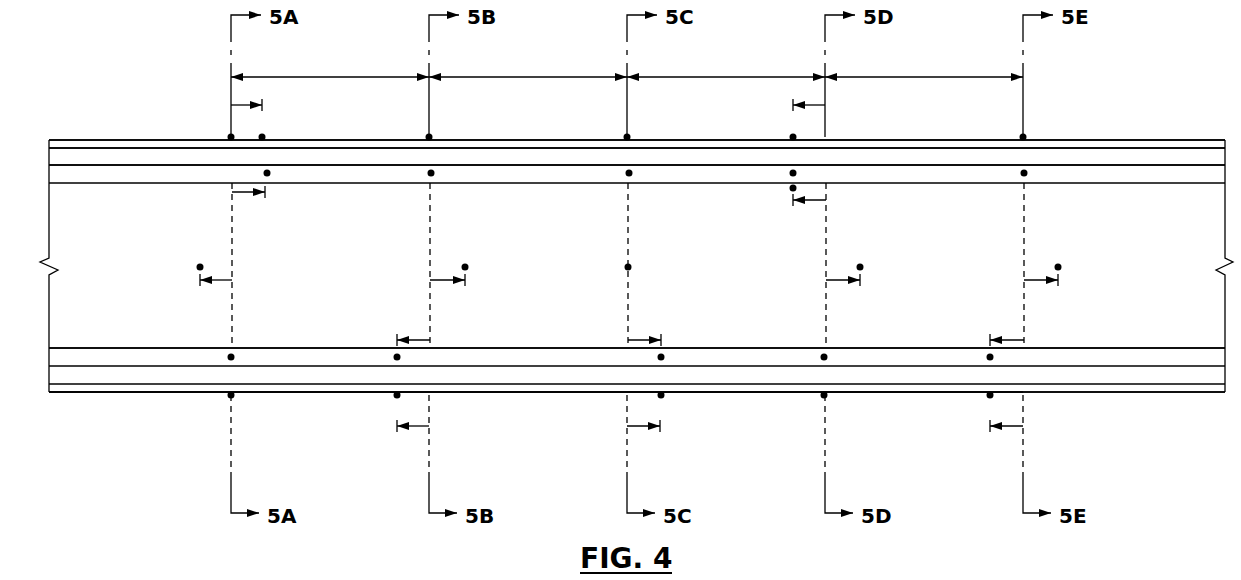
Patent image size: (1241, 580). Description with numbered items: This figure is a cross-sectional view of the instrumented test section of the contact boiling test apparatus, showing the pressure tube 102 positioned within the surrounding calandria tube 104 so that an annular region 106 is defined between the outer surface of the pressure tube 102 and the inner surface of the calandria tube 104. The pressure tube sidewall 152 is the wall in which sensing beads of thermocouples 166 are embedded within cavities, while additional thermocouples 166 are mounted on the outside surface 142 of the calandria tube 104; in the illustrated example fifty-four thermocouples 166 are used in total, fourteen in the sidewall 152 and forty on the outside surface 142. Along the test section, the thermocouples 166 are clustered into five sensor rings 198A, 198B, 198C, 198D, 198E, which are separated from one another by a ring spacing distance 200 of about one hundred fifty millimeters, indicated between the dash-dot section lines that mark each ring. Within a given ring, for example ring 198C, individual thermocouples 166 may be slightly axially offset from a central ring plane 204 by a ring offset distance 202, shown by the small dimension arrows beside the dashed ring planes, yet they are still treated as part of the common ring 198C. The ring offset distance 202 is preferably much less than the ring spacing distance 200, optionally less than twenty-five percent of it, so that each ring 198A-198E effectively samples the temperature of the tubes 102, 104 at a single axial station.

The pressure tube 102 is at (130, 352).
The calandria tube 104 is at (124, 140).
The annular region 106 is at (1092, 155).
The outside surface of the calandria tube 142 is at (77, 398).
The pressure tube sidewall 152 is at (110, 175).
The thermocouple 166 is at (267, 175).
The sensor ring 198A is at (205, 402).
The sensor ring 198B is at (365, 402).
The sensor ring 198C is at (583, 402).
The sensor ring 198D is at (805, 402).
The sensor ring 198E is at (960, 402).
The ring spacing distance 200 is at (331, 77).
The ring offset distance 202 is at (231, 280).
The central ring plane 204 is at (627, 220).